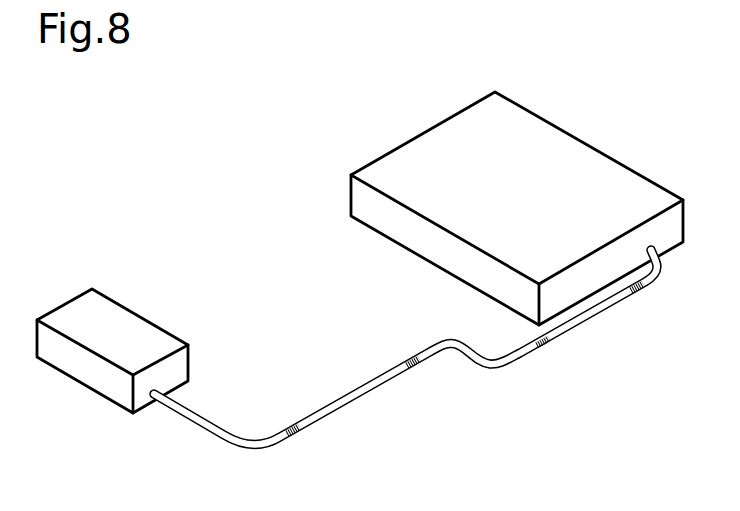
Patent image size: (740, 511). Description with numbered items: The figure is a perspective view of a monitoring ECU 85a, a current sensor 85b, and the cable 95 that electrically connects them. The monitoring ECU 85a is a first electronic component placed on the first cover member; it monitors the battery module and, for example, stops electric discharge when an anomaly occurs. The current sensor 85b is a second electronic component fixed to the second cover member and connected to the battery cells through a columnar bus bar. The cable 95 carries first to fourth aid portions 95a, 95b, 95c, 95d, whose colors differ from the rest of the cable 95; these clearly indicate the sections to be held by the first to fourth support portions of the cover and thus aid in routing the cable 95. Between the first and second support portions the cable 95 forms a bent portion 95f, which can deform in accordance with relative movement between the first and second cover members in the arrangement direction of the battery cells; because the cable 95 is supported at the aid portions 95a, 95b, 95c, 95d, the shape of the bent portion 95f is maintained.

The monitoring ECU 85a is at (550, 138).
The current sensor 85b is at (73, 312).
The cable 95 is at (350, 395).
The first aid portion 95a is at (545, 349).
The second aid portion 95b is at (417, 373).
The third aid portion 95c is at (640, 294).
The fourth aid portion 95d is at (295, 438).
The bent portion 95f is at (469, 322).